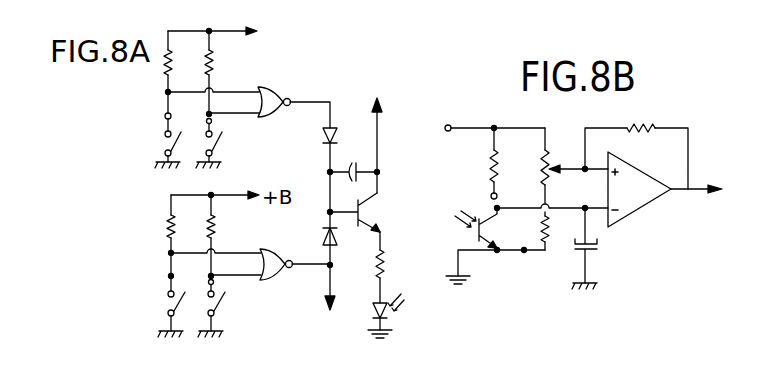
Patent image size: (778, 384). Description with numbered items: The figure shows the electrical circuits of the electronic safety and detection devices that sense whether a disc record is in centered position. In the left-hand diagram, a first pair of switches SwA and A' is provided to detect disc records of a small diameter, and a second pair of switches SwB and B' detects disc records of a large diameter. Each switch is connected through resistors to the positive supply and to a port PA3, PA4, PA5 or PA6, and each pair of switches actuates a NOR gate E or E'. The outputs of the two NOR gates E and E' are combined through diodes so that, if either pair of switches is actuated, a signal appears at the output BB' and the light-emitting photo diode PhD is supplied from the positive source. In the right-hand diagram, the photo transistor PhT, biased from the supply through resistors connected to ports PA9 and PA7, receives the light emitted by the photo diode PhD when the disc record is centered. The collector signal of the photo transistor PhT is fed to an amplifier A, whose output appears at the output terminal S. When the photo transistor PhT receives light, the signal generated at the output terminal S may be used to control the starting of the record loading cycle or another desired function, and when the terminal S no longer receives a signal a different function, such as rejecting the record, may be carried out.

In FIG. 8A, the NOR gate E is at (294, 94).
In FIG. 8A, the NOR gate E' is at (295, 256).
In FIG. 8A, the port PA3 is at (156, 116).
In FIG. 8A, the port PA4 is at (226, 122).
In FIG. 8A, the port PA5 is at (151, 274).
In FIG. 8A, the port PA6 is at (231, 284).
In FIG. 8B, the port PA7 is at (521, 262).
In FIG. 8B, the port PA9 is at (474, 193).
In FIG. 8A, the switch SwA is at (150, 143).
In FIG. 8A, the switch SwB is at (147, 308).
In FIG. 8A, the switch A' is at (219, 146).
In FIG. 8A, the switch B' is at (225, 311).
In FIG. 8A, the output BB' is at (334, 300).
In FIG. 8A, the photo diode PhD is at (405, 316).
In FIG. 8B, the photo transistor PhT is at (459, 245).
In FIG. 8B, the amplifier A is at (636, 175).
In FIG. 8B, the output terminal S is at (709, 190).